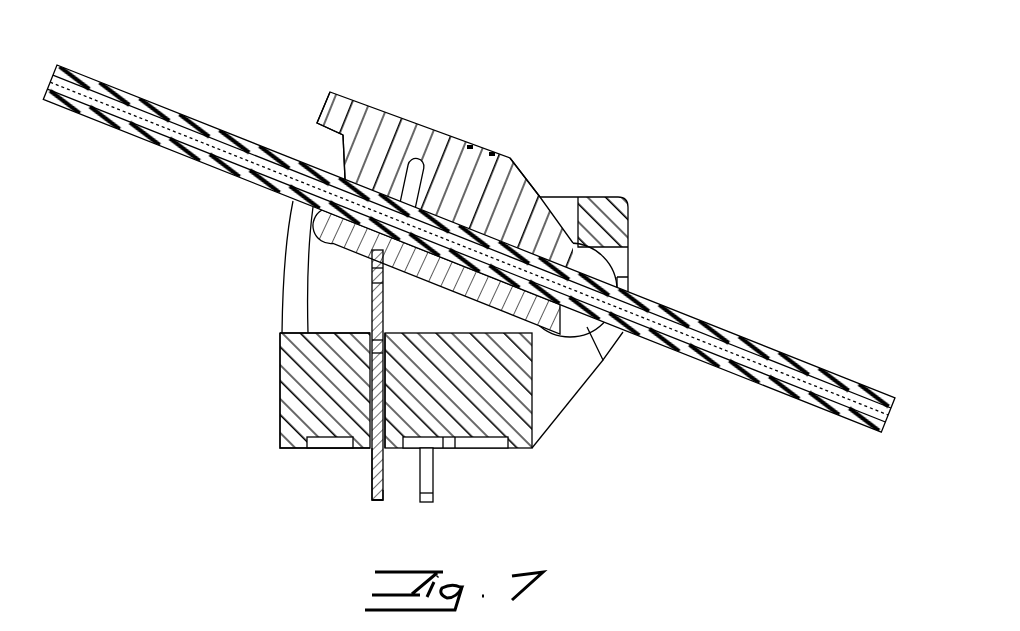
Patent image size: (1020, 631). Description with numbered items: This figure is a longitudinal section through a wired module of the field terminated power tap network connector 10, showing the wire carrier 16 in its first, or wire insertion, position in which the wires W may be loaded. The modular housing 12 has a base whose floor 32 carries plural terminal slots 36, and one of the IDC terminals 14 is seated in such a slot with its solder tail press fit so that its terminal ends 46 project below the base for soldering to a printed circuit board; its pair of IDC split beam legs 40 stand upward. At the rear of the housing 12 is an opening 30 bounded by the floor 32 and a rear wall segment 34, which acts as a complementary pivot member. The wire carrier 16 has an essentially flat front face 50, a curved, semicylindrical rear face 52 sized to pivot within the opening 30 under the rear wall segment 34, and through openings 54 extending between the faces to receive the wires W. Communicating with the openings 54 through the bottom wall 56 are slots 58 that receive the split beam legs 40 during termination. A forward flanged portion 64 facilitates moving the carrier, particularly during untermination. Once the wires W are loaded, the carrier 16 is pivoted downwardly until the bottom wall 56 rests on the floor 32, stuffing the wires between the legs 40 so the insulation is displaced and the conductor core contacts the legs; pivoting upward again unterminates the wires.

The wires W is at (118, 90).
The power tap network connector 10 is at (522, 98).
The modular housing 12 is at (266, 410).
The IDC terminals 14 is at (362, 465).
The wire carrier 16 is at (391, 99).
The opening 30 is at (557, 373).
The floor 32 is at (323, 332).
The rear wall segment 34 is at (597, 197).
The terminal slots 36 is at (386, 375).
The IDC split beam legs 40 is at (383, 284).
The terminal ends 46 is at (377, 500).
The front face 50 is at (345, 165).
The rear face 52 is at (632, 252).
The through openings 54 is at (585, 325).
The bottom wall 56 is at (293, 241).
The slots 58 is at (422, 155).
The forward flanged portion 64 is at (320, 99).